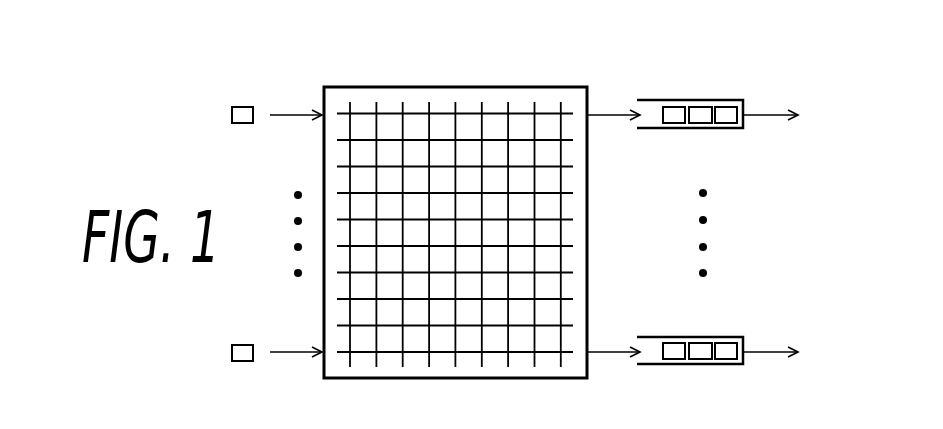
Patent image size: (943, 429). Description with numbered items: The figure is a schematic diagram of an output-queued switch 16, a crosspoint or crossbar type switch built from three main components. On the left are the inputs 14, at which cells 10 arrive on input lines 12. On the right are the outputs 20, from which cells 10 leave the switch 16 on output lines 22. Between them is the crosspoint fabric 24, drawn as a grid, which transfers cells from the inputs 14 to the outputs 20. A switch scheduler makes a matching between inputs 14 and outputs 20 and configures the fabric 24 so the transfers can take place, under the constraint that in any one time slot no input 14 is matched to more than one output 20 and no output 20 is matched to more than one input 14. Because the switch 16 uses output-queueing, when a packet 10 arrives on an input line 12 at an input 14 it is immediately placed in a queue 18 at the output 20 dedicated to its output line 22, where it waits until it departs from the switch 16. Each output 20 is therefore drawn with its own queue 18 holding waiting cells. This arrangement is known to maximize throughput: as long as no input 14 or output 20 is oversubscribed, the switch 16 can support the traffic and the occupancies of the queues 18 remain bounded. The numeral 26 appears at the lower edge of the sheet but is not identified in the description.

The cell 10 is at (205, 234).
The input line 12 is at (267, 233).
The input 14 is at (238, 180).
The output-queued switch 16 is at (518, 189).
The queue 18 is at (675, 233).
The output 20 is at (731, 195).
The output line 22 is at (796, 221).
The crosspoint fabric 24 is at (455, 263).
The output port 26 is at (663, 428).